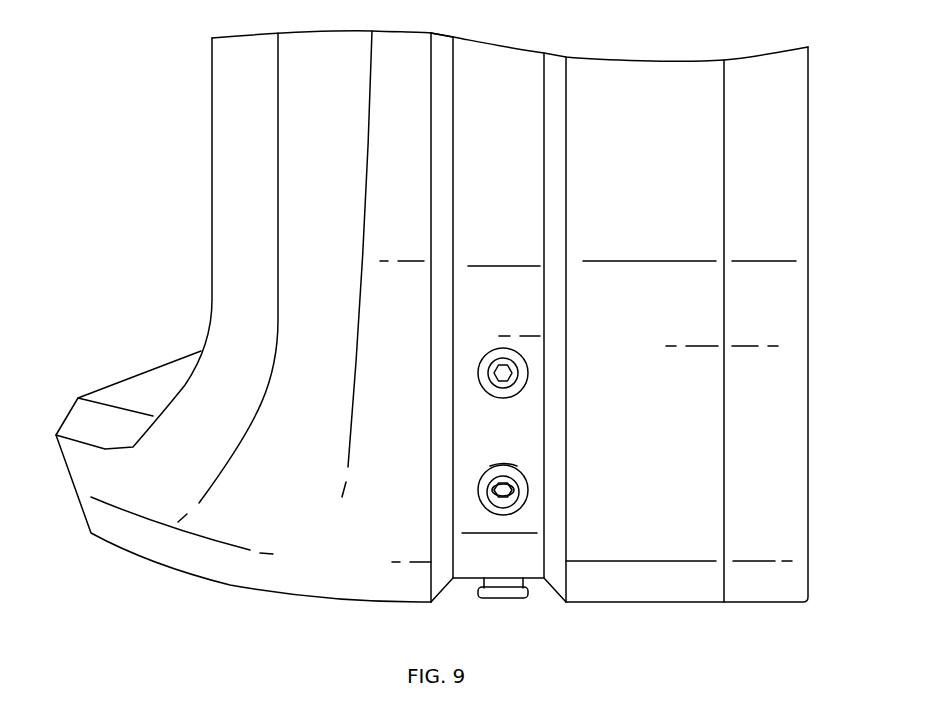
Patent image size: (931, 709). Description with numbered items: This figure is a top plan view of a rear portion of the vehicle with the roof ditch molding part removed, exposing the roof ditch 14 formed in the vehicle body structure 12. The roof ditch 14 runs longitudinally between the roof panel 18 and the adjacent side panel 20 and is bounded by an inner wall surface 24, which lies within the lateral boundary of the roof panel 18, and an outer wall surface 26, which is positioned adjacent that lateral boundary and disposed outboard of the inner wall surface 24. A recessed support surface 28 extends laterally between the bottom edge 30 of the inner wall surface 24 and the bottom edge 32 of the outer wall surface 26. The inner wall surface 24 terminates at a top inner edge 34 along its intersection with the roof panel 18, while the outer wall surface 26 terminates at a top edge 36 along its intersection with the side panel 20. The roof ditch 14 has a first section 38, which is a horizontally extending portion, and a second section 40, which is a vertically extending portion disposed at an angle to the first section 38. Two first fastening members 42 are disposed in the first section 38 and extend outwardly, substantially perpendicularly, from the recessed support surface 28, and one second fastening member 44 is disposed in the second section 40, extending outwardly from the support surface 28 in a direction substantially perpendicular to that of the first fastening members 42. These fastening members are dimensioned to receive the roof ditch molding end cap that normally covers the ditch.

The vehicle body structure 12 is at (212, 124).
The roof ditch 14 is at (566, 97).
The roof panel 18 is at (683, 164).
The side panel 20 is at (322, 179).
The inner wall surface 24 is at (553, 232).
The outer wall surface 26 is at (441, 234).
The recessed support surface 28 is at (487, 168).
The bottom edge of inner wall surface 30 is at (548, 155).
The bottom edge of outer wall surface 32 is at (453, 93).
The top inner edge 34 is at (566, 310).
The top edge 36 is at (431, 323).
The first section 38 is at (453, 433).
The second section 40 is at (465, 578).
The first fastening member 42 is at (497, 398).
The second fastening member 44 is at (503, 600).